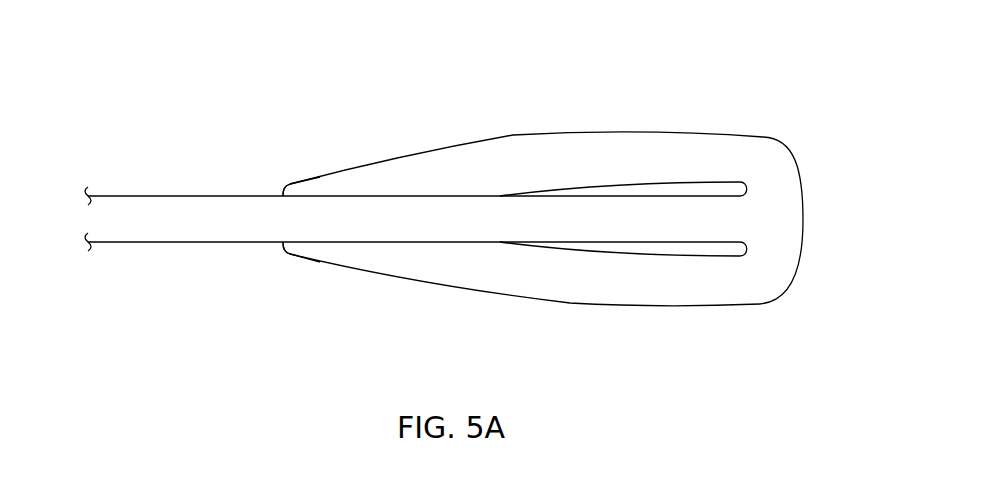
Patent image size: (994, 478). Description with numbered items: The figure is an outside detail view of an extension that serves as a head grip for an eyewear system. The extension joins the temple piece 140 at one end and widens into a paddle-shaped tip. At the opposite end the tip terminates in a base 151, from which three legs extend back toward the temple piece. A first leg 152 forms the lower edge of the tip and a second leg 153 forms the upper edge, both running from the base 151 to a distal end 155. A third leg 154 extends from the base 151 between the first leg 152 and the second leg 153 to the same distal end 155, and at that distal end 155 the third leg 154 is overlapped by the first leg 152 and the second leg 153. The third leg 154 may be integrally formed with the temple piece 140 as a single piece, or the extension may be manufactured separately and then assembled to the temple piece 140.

The temple piece 140 is at (231, 244).
The base 151 is at (596, 237).
The first leg 152 is at (660, 307).
The second leg 153 is at (512, 136).
The third leg 154 is at (577, 242).
The distal end 155 is at (295, 146).